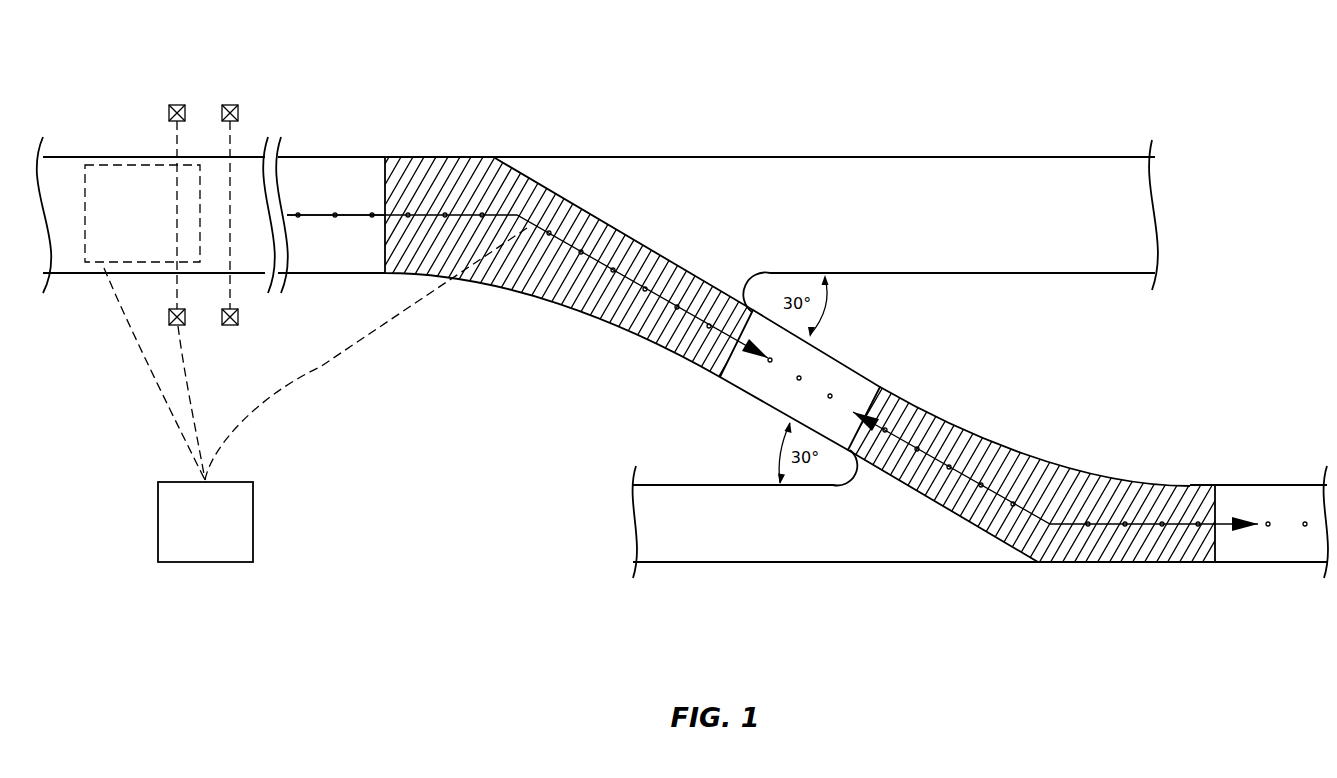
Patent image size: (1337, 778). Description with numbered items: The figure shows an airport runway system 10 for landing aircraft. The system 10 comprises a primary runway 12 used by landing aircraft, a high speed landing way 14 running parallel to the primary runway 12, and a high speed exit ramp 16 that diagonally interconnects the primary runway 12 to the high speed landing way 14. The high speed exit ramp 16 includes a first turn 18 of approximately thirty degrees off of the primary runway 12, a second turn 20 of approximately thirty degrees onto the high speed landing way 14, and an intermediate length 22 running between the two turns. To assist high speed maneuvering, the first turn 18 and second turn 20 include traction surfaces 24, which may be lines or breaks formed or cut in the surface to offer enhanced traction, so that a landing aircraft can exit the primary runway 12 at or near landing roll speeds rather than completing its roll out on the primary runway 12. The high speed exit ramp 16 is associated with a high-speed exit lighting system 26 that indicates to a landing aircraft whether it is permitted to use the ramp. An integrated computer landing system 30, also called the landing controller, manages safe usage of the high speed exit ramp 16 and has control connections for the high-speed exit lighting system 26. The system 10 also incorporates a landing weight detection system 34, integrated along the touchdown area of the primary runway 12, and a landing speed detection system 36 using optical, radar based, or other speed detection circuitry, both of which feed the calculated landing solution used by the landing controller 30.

The airport runway system 10 is at (846, 83).
The primary runway 12 is at (907, 157).
The high speed landing way 14 is at (1257, 563).
The high speed exit ramp 16 is at (848, 360).
The first turn 18 is at (565, 230).
The second turn 20 is at (892, 407).
The intermediate length 22 is at (770, 383).
The traction surfaces 24 is at (605, 243).
The high-speed exit lighting system 26 is at (359, 213).
The integrated computer landing system 30 is at (195, 545).
The landing weight detection system 34 is at (141, 184).
The landing speed detection system 36 is at (174, 104).